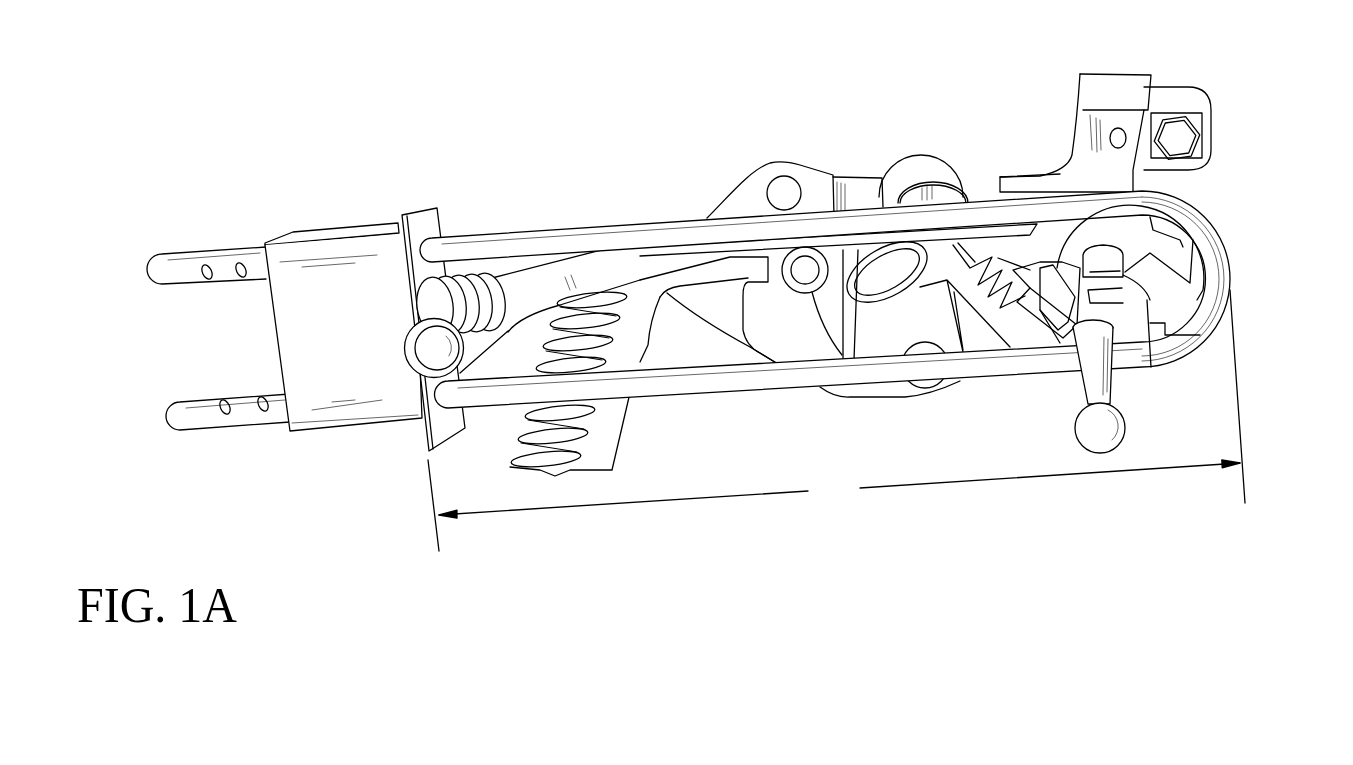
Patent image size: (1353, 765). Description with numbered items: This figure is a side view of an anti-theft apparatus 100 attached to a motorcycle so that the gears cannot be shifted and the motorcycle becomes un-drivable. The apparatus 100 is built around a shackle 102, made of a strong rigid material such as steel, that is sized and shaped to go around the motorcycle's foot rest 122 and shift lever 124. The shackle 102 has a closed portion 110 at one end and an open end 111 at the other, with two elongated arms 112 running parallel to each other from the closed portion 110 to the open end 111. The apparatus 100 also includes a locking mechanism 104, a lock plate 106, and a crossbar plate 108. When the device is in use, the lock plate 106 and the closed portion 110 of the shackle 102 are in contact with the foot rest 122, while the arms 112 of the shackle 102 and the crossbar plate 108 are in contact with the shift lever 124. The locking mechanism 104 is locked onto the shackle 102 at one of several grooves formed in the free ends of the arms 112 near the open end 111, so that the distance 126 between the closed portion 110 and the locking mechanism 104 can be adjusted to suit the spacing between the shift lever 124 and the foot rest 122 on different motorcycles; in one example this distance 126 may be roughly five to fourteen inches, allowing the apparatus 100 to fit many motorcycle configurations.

The apparatus 100 is at (1259, 135).
The shackle 102 is at (990, 217).
The locking mechanism 104 is at (351, 396).
The lock plate 106 is at (838, 210).
The crossbar plate 108 is at (413, 222).
The closed portion 110 is at (1213, 251).
The open end 111 is at (176, 359).
The arms 112 is at (678, 362).
The foot rest 122 is at (1158, 312).
The shift lever 124 is at (463, 325).
The distance 126 is at (836, 420).